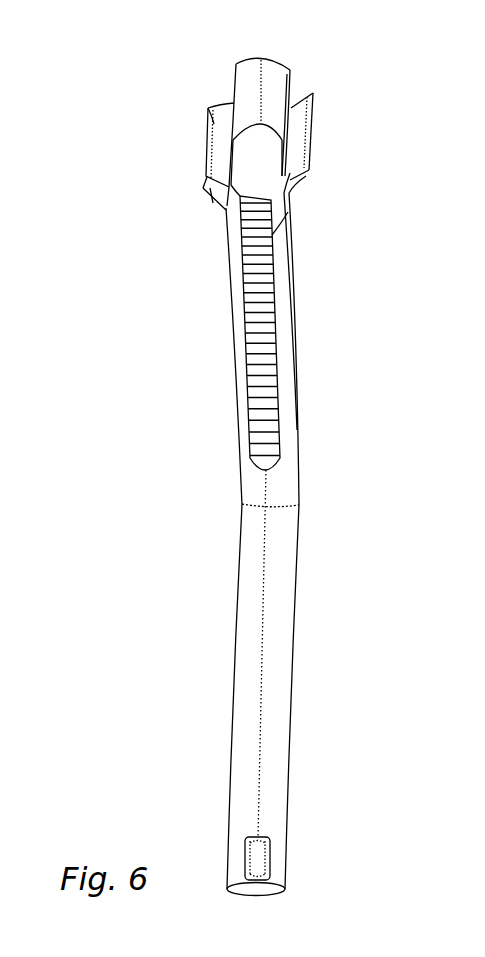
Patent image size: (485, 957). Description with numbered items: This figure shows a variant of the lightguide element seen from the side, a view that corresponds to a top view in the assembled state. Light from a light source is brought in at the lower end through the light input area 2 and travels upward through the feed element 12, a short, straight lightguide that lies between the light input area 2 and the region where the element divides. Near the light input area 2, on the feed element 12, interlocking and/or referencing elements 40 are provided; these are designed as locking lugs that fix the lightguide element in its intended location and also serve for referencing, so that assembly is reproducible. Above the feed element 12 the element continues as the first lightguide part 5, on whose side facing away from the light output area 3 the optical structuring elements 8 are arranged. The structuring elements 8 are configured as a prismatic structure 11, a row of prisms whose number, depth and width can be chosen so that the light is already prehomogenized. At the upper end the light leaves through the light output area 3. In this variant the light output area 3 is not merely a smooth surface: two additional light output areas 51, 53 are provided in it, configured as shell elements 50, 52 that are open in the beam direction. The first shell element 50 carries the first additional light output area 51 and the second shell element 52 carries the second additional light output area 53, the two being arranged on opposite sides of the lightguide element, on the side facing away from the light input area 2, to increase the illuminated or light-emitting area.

The light output area 3 is at (247, 78).
The first additional light output area 51 is at (207, 121).
The second additional light output area 53 is at (313, 108).
The second shell element 52 is at (308, 173).
The first shell element 50 is at (205, 191).
The first lightguide part 5 is at (283, 340).
The optical structuring elements 8 is at (258, 342).
The prismatic structure 11 is at (272, 247).
The feed element 12 is at (288, 580).
The interlocking and/or referencing elements 40 is at (270, 852).
The light input area 2 is at (262, 893).